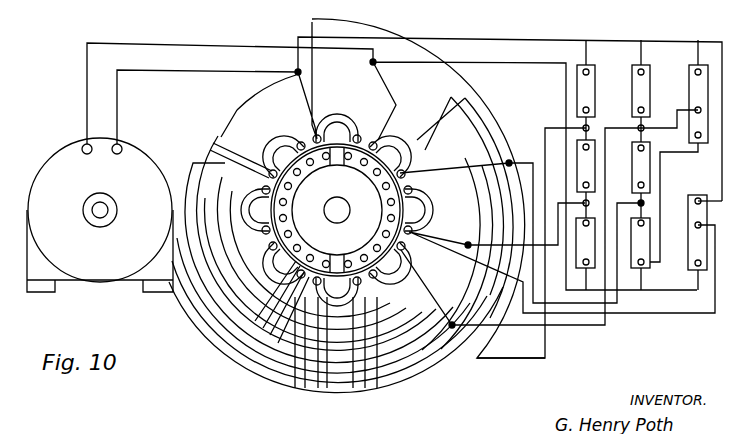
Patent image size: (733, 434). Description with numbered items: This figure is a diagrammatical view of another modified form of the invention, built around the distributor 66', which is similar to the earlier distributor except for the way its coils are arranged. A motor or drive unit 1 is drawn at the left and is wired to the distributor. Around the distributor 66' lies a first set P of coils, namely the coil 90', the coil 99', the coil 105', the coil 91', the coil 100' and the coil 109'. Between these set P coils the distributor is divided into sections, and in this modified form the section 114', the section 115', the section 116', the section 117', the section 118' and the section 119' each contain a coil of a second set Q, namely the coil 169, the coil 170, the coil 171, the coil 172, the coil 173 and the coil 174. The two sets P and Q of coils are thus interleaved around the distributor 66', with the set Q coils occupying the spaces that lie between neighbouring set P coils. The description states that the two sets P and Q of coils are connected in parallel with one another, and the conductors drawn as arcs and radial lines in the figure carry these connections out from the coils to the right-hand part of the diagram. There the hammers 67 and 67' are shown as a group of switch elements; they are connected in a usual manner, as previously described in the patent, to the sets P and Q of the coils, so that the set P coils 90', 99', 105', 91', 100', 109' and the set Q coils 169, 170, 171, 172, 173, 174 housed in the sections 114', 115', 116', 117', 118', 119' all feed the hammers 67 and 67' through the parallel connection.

The motor 1 is at (100, 215).
The coil 169 is at (328, 126).
The section 114' is at (345, 117).
The coil 90' is at (257, 126).
The distributor 66' is at (390, 138).
The coil 109' is at (465, 216).
The section 115' is at (319, 242).
The coil 170 is at (253, 173).
The coil 174 is at (410, 160).
The section 119' is at (557, 234).
The coil 99' is at (300, 253).
The coil 100' is at (437, 211).
The coil 173 is at (413, 250).
The section 118' is at (410, 266).
The section 116' is at (216, 252).
The coil 171 is at (275, 262).
The coil 105' is at (313, 293).
The section 117' is at (336, 347).
The coil 172 is at (353, 390).
The coil 91' is at (336, 320).
The hammer 67 is at (654, 165).
The hammer 67' is at (686, 165).